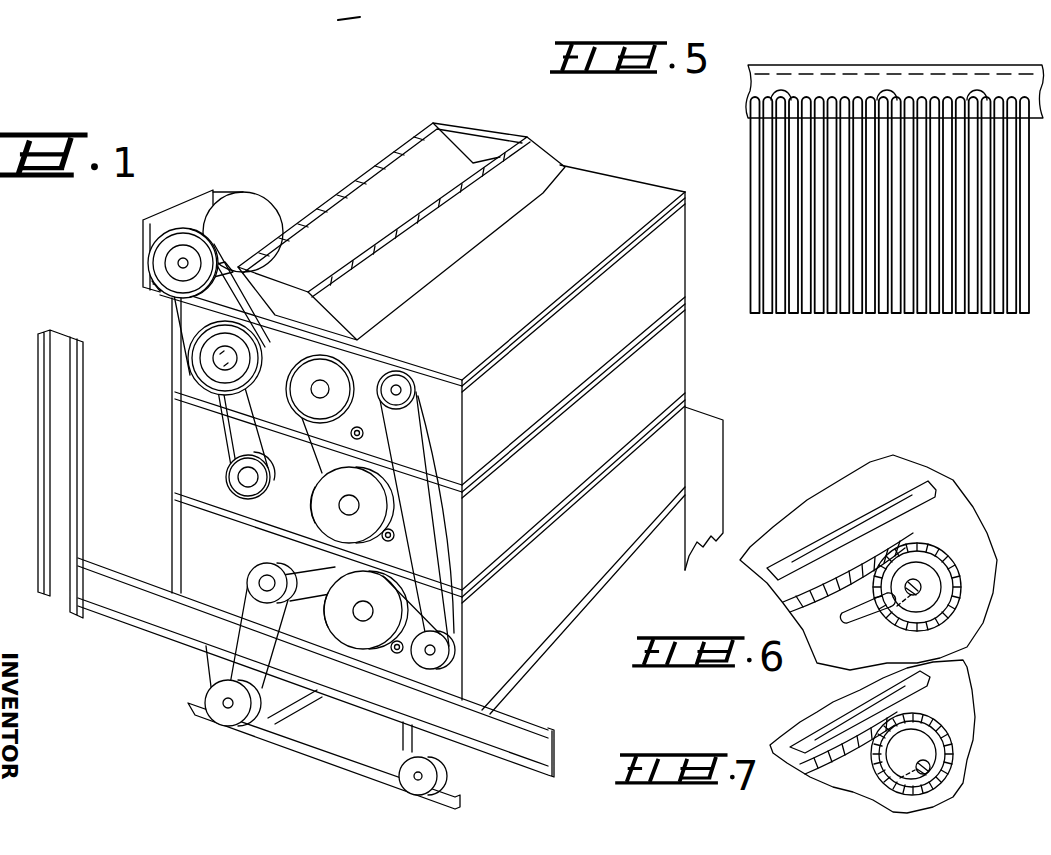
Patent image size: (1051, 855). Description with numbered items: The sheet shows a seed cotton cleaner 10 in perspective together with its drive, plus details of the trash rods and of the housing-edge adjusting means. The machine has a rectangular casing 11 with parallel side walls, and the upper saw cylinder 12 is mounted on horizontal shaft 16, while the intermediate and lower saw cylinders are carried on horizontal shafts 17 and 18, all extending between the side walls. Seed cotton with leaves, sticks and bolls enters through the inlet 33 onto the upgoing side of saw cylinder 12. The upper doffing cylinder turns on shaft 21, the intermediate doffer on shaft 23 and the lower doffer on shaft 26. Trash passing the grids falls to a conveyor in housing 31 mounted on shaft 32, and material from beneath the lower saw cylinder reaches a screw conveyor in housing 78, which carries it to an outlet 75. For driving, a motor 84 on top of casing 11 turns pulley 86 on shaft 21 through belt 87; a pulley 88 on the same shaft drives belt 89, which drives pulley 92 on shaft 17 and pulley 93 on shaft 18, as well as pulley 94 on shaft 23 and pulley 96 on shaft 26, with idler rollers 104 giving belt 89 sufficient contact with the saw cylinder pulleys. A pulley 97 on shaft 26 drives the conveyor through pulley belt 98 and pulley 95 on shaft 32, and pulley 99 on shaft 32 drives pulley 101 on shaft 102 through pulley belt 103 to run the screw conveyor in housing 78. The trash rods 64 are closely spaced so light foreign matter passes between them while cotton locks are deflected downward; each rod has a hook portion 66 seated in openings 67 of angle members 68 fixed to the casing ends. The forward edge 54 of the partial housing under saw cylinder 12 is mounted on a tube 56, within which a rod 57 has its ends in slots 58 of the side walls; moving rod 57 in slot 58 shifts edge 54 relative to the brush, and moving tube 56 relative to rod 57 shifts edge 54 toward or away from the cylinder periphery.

In FIG. 1, the seed cotton cleaner 10 is at (572, 160).
In FIG. 1, the casing 11 is at (660, 190).
In FIG. 6, the casing 11 is at (985, 578).
In FIG. 7, the casing 11 is at (972, 752).
In FIG. 6, the upper saw cylinder 12 is at (915, 495).
In FIG. 7, the upper saw cylinder 12 is at (866, 708).
In FIG. 1, the horizontal shaft 16 is at (315, 396).
In FIG. 1, the horizontal shaft 17 is at (349, 497).
In FIG. 1, the horizontal shaft 18 is at (362, 606).
In FIG. 1, the horizontal shaft 21 is at (232, 370).
In FIG. 1, the horizontal shaft 23 is at (258, 476).
In FIG. 1, the shaft 26 is at (260, 565).
In FIG. 1, the housing 31 is at (206, 664).
In FIG. 1, the shaft 32 is at (224, 702).
In FIG. 1, the inlet 33 is at (507, 198).
In FIG. 6, the forward edge 54 is at (925, 555).
In FIG. 7, the forward edge 54 is at (926, 718).
In FIG. 6, the tube 56 is at (905, 625).
In FIG. 7, the tube 56 is at (878, 768).
In FIG. 1, the rod 57 is at (364, 433).
In FIG. 6, the rod 57 is at (904, 590).
In FIG. 7, the rod 57 is at (921, 762).
In FIG. 6, the slots 58 is at (845, 630).
In FIG. 5, the trash rods 64 is at (752, 262).
In FIG. 5, the hook portion 66 is at (804, 99).
In FIG. 5, the openings 67 is at (909, 99).
In FIG. 5, the angle members 68 is at (862, 74).
In FIG. 1, the outlet 75 is at (726, 478).
In FIG. 1, the housing 78 is at (480, 758).
In FIG. 1, the motor 84 is at (236, 199).
In FIG. 1, the pulley 86 is at (262, 354).
In FIG. 1, the belt 87 is at (218, 256).
In FIG. 1, the pulley 88 is at (213, 362).
In FIG. 1, the belt 89 is at (217, 455).
In FIG. 1, the pulley 92 is at (312, 510).
In FIG. 1, the pulley 93 is at (330, 615).
In FIG. 1, the pulley 94 is at (245, 456).
In FIG. 1, the pulley 95 is at (283, 712).
In FIG. 1, the pulley 96 is at (310, 420).
In FIG. 1, the pulley 97 is at (247, 577).
In FIG. 1, the pulley belt 98 is at (247, 595).
In FIG. 1, the pulley 99 is at (230, 725).
In FIG. 1, the pulley 101 is at (412, 790).
In FIG. 1, the shaft 102 is at (401, 770).
In FIG. 1, the pulley belt 103 is at (307, 753).
In FIG. 1, the idler rollers 104 is at (403, 380).